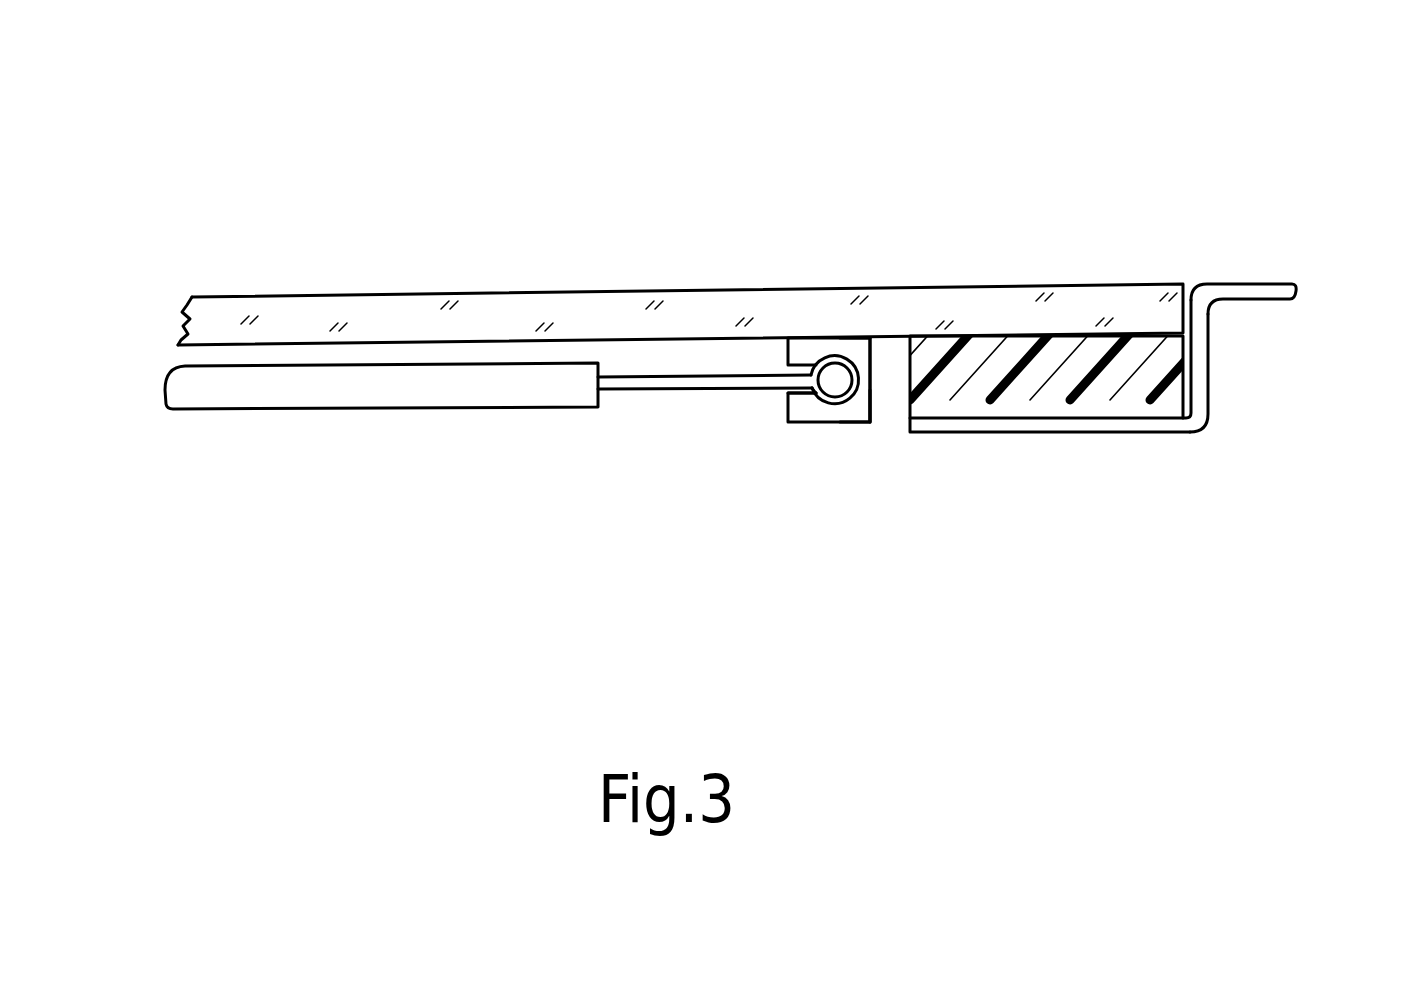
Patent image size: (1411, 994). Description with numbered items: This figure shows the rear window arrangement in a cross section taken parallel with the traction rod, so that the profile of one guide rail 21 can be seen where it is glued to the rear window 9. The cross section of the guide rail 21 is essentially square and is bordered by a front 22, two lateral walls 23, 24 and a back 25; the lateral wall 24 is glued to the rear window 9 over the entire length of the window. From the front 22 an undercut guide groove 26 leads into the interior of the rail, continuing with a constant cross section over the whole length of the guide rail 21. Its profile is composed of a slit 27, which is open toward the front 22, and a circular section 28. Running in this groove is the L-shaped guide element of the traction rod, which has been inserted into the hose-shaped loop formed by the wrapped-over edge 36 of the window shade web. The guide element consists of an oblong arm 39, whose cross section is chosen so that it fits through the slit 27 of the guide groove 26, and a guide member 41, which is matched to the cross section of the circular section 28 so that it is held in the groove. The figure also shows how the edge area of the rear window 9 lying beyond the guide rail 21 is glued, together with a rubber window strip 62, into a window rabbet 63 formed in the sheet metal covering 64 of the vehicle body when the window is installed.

The rear window 9 is at (372, 322).
The guide rail 21 is at (881, 395).
The front 22 is at (790, 400).
The lateral wall 23 is at (833, 383).
The lateral wall 24 is at (852, 338).
The back 25 is at (870, 363).
The undercut guide groove 26 is at (826, 348).
The slit 27 is at (805, 363).
The circular section 28 is at (868, 397).
The edge of window shade web 36 is at (305, 400).
The oblong arm 39 is at (657, 382).
The guide member 41 is at (828, 393).
The rubber window strip 62 is at (1163, 400).
The window rabbet 63 is at (1186, 303).
The sheet metal covering 64 is at (1254, 289).